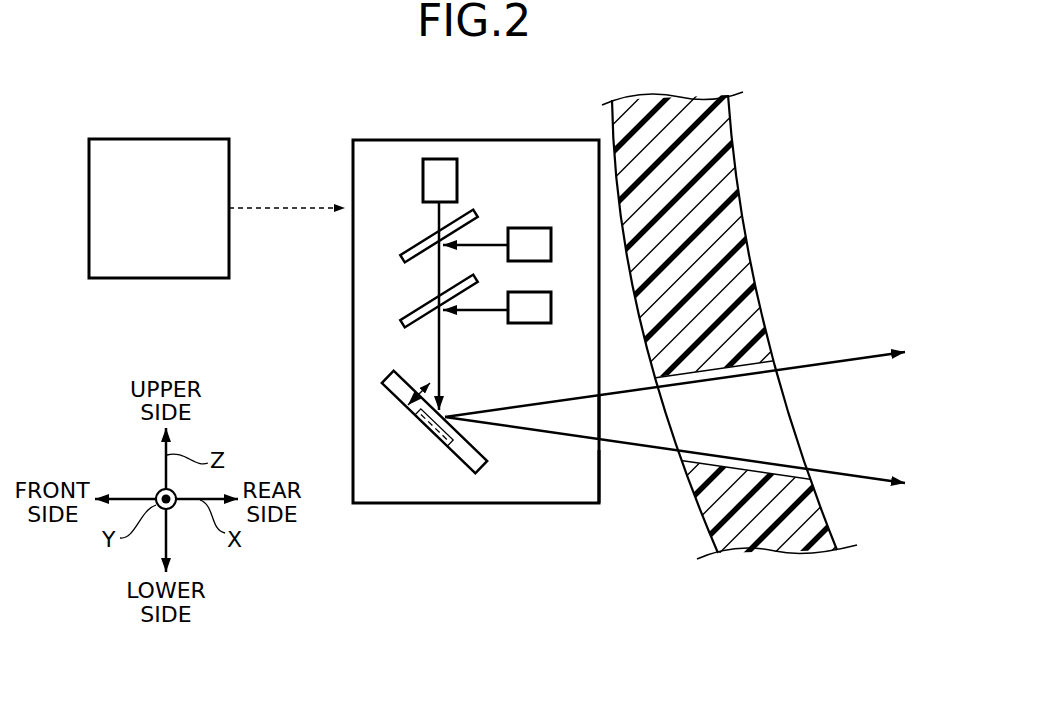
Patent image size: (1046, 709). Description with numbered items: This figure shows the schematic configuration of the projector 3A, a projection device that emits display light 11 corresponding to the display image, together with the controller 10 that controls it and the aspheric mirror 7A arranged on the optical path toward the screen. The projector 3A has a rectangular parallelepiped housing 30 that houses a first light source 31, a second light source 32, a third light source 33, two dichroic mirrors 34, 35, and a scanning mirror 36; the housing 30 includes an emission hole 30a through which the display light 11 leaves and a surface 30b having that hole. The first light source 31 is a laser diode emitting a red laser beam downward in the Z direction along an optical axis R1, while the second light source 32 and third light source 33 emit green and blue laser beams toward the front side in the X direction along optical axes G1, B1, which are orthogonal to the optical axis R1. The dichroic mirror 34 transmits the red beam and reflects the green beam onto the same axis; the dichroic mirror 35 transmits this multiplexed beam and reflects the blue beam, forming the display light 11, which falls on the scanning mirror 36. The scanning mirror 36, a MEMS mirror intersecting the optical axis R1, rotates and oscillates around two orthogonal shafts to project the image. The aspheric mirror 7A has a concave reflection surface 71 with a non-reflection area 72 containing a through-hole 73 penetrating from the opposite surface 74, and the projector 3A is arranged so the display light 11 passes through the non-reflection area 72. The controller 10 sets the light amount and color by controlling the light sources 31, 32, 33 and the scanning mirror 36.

The projector 3A is at (496, 121).
The controller 10 is at (195, 139).
The housing 30 is at (528, 140).
The emission hole 30a is at (602, 414).
The surface 30b is at (603, 486).
The first light source 31 is at (478, 182).
The second light source 32 is at (570, 252).
The third light source 33 is at (570, 316).
The dichroic mirror 34 is at (402, 260).
The dichroic mirror 35 is at (402, 326).
The scanning mirror 36 is at (393, 395).
The optical axis of the red laser beam R1 is at (440, 227).
The optical axis of the green laser beam G1 is at (487, 244).
The optical axis of the blue laser beam B1 is at (487, 312).
The display light 11 is at (843, 354).
The aspheric mirror 7A is at (523, 354).
The reflection surface 71 is at (750, 243).
The non-reflection area 72 is at (792, 408).
The through-hole 73 is at (793, 466).
The surface 74 is at (698, 509).